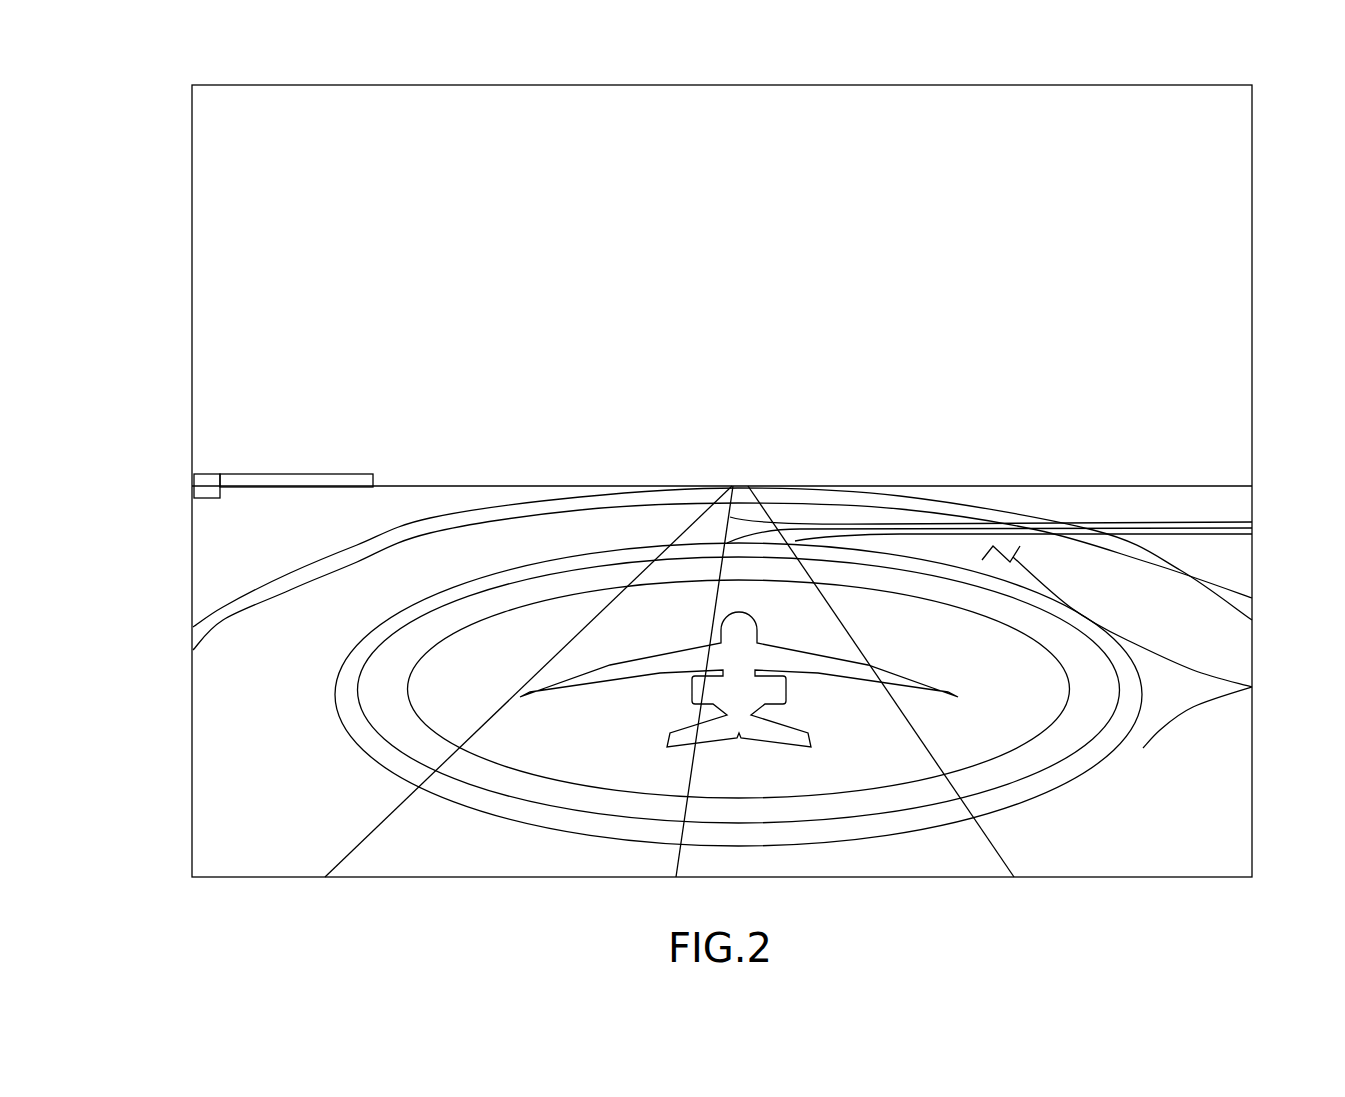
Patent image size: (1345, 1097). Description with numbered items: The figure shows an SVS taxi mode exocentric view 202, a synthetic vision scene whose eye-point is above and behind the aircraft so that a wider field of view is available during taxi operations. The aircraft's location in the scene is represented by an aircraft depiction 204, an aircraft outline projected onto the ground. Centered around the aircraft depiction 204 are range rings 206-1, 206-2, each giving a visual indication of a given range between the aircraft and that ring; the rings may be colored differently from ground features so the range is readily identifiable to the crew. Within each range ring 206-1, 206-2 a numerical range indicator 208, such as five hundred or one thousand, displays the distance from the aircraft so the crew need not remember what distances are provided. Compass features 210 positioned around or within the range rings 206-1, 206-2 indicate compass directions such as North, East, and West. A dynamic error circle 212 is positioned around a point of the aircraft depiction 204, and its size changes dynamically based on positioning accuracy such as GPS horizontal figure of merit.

The SVS taxi mode exocentric view 202 is at (170, 78).
The aircraft depiction 204 is at (610, 667).
The range ring 206-1 is at (338, 670).
The range ring 206-2 is at (1216, 586).
The numerical range indicator 208 is at (340, 720).
The compass features 210 is at (377, 585).
The dynamic error circle 212 is at (437, 738).